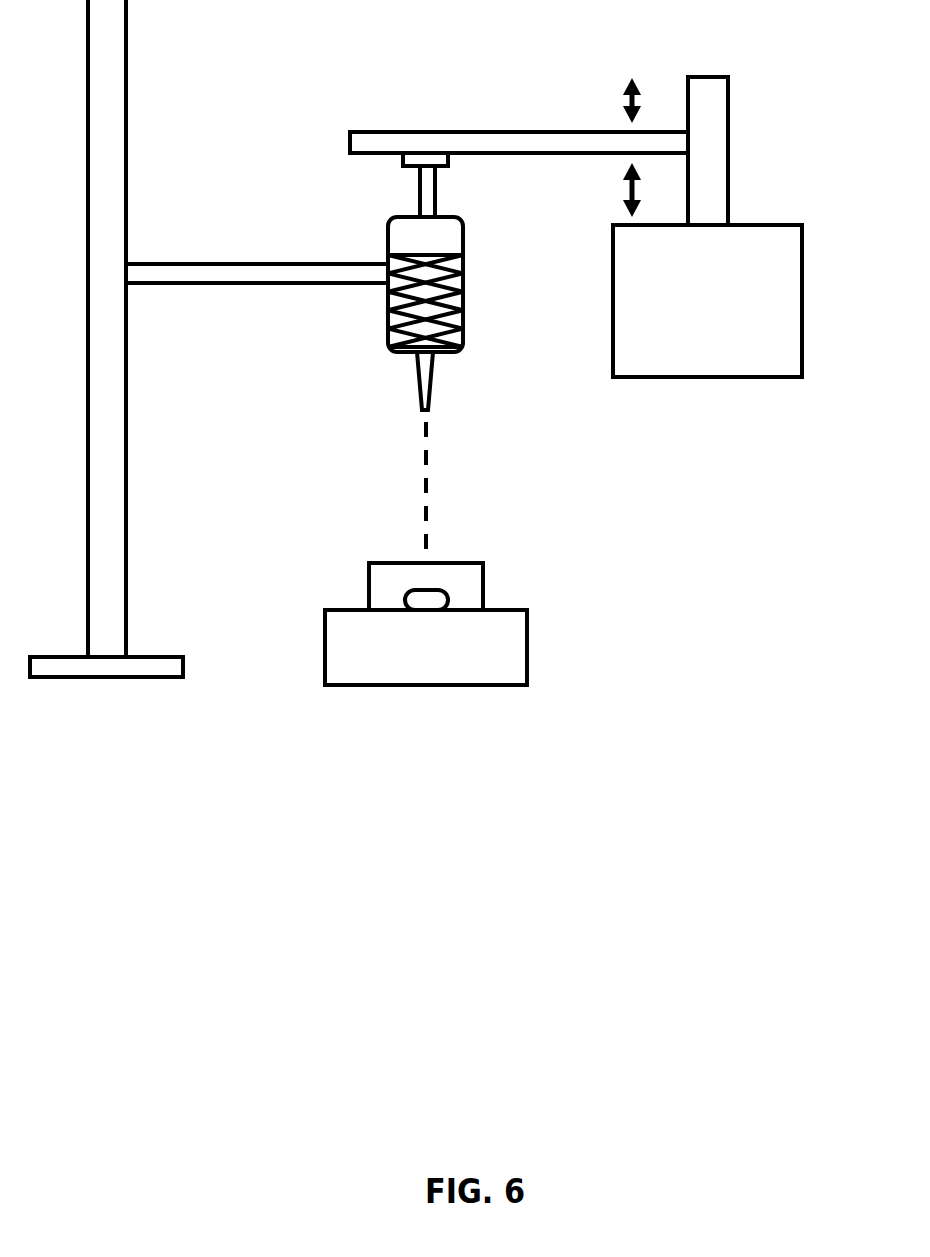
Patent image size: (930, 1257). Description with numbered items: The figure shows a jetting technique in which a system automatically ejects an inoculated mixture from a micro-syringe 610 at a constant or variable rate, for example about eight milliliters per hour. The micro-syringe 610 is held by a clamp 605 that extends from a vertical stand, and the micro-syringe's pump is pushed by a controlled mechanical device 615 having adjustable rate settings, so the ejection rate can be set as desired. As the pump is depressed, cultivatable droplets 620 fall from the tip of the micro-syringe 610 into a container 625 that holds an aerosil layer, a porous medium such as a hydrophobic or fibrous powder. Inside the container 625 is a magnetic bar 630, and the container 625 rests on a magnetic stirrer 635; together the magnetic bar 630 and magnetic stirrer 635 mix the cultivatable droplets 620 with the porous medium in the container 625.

The clamp 605 is at (258, 263).
The micro-syringe 610 is at (463, 225).
The controlled mechanical device 615 is at (728, 150).
The cultivatable droplets 620 is at (430, 513).
The container 625 is at (485, 588).
The magnetic bar 630 is at (405, 603).
The magnetic stirrer 635 is at (426, 647).